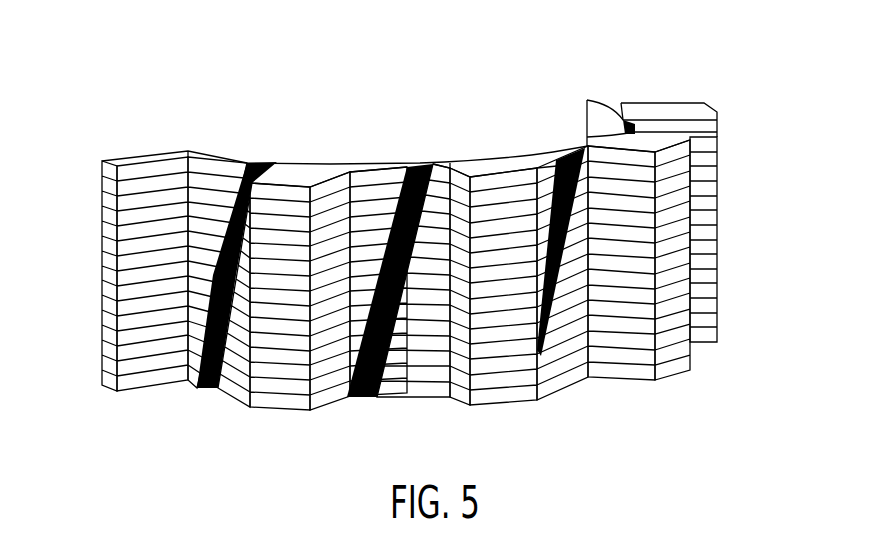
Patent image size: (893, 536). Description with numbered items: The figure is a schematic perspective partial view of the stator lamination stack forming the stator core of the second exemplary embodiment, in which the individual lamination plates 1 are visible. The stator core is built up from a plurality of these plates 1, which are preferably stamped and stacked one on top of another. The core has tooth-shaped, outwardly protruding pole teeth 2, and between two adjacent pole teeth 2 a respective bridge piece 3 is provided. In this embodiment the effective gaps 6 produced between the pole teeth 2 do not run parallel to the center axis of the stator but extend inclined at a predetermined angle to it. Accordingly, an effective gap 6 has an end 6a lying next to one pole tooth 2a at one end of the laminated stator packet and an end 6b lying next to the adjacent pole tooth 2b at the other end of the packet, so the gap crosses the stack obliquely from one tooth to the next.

The lamination plate 1 is at (758, 338).
The pole tooth 2 is at (677, 103).
The pole tooth 2a is at (293, 186).
The adjacent pole tooth 2b is at (137, 391).
The bridge piece 3 is at (587, 148).
The effective gap 6 is at (418, 165).
The end of effective gap 6a is at (264, 160).
The end of effective gap 6b is at (207, 393).